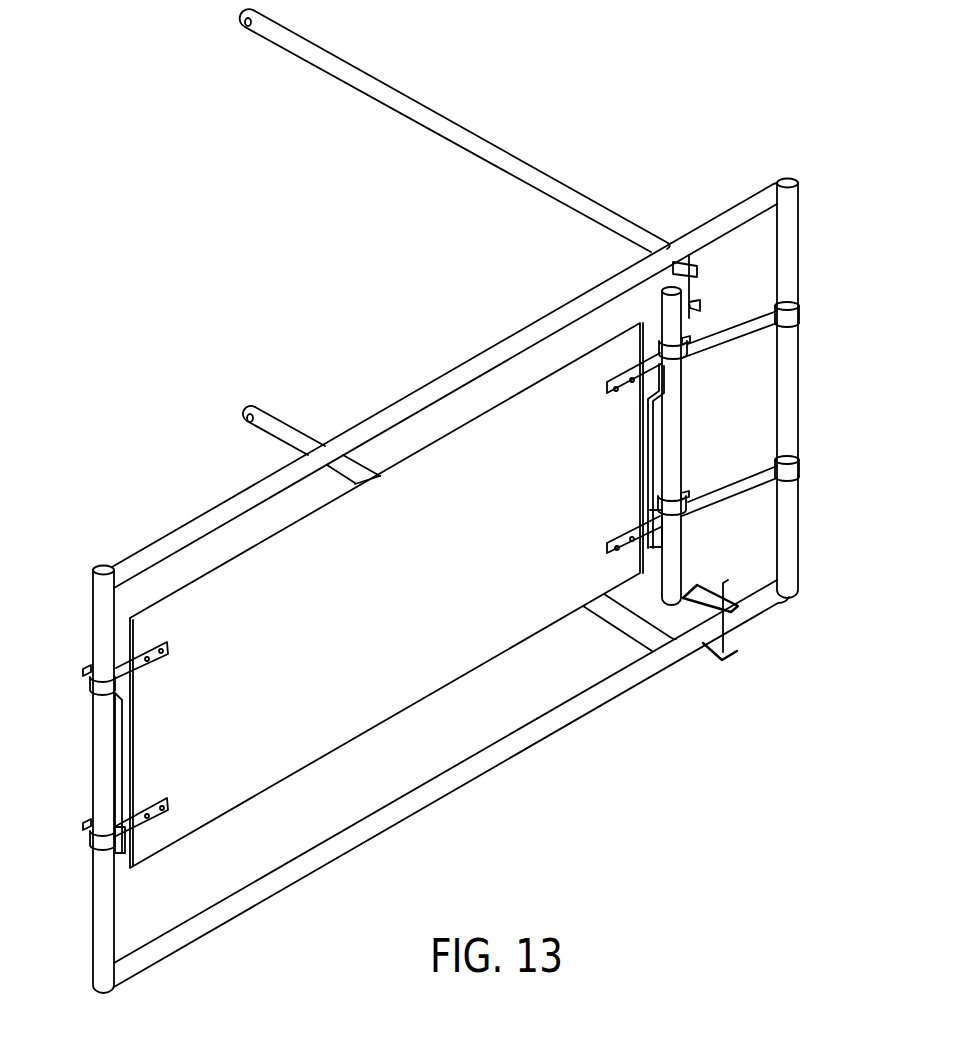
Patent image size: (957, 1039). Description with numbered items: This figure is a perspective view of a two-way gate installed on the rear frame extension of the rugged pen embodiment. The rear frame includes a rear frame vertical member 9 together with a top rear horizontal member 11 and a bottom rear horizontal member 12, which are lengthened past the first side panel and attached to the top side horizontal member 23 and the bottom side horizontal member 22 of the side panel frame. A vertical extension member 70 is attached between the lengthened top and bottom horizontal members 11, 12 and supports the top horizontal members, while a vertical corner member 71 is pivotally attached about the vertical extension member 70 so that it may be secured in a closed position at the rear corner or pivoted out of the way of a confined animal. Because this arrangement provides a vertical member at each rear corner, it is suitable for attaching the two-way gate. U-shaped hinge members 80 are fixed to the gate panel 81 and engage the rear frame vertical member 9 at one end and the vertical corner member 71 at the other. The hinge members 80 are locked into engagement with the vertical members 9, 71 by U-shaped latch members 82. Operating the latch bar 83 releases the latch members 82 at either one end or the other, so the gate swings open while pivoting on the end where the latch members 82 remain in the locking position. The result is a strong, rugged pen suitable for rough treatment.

The rear frame vertical member 9 is at (97, 804).
The top rear horizontal member 11 is at (207, 518).
The bottom rear horizontal member 12 is at (265, 902).
The bottom side horizontal member 22 is at (287, 435).
The top side horizontal member 23 is at (502, 161).
The vertical extension member 70 is at (799, 407).
The vertical corner member 71 is at (686, 450).
The U-shaped hinge member 80 is at (606, 389).
The gate panel 81 is at (312, 763).
The U-shaped latch member 82 is at (686, 343).
The latch bar 83 is at (648, 458).